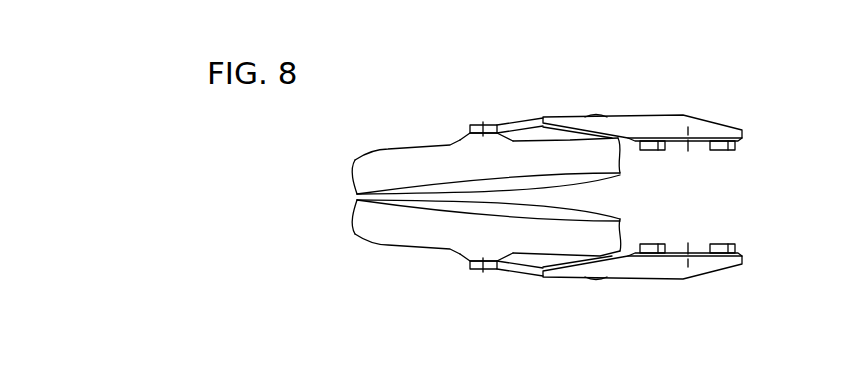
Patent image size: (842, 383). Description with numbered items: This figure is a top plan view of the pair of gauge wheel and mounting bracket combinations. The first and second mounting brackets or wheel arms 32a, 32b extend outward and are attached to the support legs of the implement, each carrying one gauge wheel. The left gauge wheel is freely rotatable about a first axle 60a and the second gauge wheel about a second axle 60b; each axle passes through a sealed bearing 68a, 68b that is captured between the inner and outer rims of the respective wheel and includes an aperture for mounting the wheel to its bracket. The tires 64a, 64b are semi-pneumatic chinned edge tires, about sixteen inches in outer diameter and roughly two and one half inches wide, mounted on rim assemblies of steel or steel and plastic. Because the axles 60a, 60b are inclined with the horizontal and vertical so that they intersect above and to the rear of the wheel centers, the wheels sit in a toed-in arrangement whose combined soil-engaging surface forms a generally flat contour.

The first mounting bracket 32a is at (649, 268).
The second mounting bracket 32b is at (648, 125).
The first axle 60a is at (478, 271).
The second axle 60b is at (477, 124).
The tire 64a is at (420, 237).
The tire 64b is at (418, 181).
The sealed bearing 68a is at (462, 257).
The sealed bearing 68b is at (458, 135).